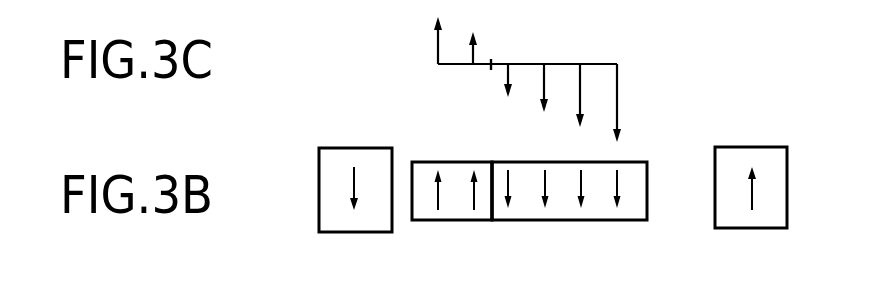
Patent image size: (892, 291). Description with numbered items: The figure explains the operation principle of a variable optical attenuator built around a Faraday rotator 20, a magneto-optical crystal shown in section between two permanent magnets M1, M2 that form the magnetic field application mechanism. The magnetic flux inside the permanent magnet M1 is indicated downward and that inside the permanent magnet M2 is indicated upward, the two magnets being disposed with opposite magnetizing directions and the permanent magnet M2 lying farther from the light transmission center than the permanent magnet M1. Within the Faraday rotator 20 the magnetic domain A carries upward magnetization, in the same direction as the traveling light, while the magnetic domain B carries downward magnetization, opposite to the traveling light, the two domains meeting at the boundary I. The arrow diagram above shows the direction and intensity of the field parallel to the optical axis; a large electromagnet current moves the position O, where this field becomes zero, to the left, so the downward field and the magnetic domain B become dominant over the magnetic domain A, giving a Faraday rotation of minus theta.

In FIG. 3C, the position where the magnetic field becomes zero O is at (497, 63).
In FIG. 3B, the permanent magnet M1 is at (357, 147).
In FIG. 3B, the permanent magnet M2 is at (752, 147).
In FIG. 3B, the Faraday rotator 20 is at (647, 186).
In FIG. 3B, the magnetic domain A is at (452, 210).
In FIG. 3B, the interface / boundary I is at (490, 205).
In FIG. 3B, the magnetic domain B is at (565, 208).